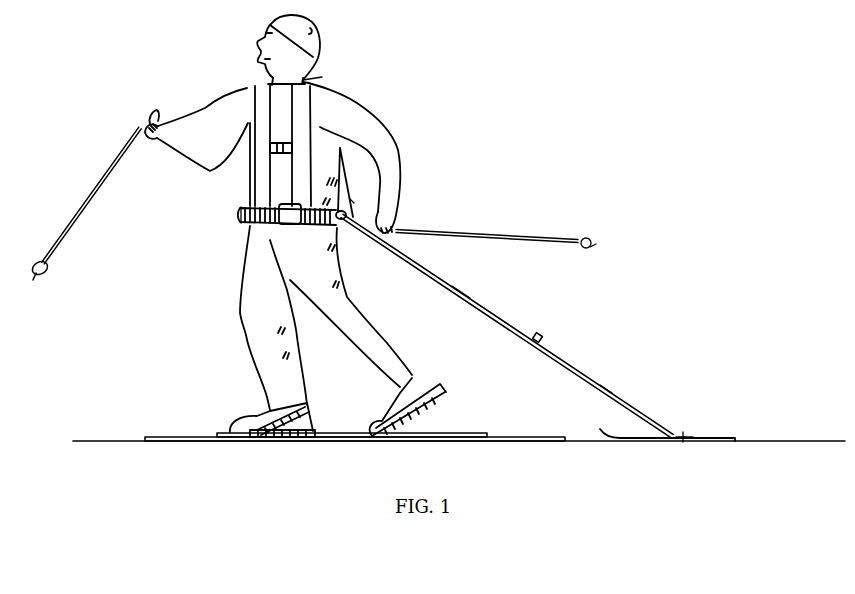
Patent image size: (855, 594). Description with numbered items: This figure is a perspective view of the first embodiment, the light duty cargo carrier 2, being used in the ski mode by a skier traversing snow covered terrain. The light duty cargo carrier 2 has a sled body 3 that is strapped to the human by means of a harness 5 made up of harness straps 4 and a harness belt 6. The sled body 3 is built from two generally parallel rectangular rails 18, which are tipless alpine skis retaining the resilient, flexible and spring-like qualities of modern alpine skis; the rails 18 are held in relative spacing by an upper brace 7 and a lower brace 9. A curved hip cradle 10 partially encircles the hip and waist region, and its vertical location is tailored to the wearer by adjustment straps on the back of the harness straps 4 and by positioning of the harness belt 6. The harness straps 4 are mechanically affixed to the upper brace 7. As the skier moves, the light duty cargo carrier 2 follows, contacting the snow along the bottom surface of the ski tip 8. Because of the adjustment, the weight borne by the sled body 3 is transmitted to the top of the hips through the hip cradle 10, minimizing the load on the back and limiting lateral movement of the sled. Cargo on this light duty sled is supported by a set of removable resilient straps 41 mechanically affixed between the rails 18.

The light duty cargo carrier 2 is at (508, 213).
The sled body 3 is at (500, 310).
The harness straps 4 is at (318, 78).
The harness 5 is at (352, 199).
The harness belt 6 is at (288, 218).
The upper brace 7 is at (357, 237).
The ski tip 8 is at (713, 437).
The lower brace 9 is at (541, 338).
The hip cradle 10 is at (343, 183).
The rails 18 is at (610, 386).
The removable resilient straps 41 is at (470, 302).